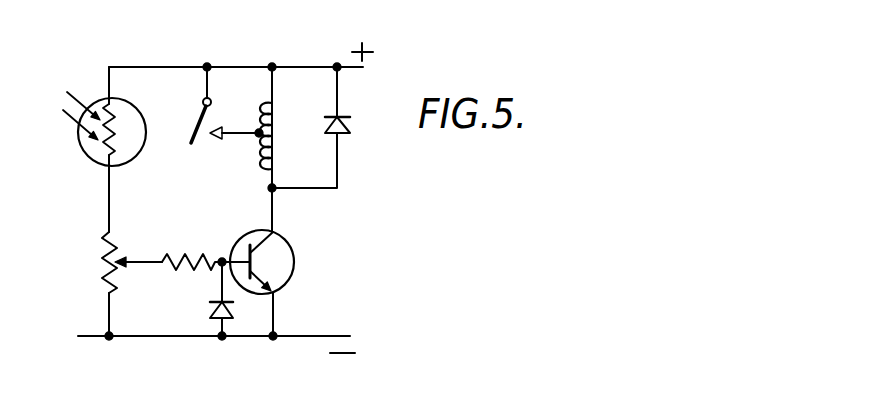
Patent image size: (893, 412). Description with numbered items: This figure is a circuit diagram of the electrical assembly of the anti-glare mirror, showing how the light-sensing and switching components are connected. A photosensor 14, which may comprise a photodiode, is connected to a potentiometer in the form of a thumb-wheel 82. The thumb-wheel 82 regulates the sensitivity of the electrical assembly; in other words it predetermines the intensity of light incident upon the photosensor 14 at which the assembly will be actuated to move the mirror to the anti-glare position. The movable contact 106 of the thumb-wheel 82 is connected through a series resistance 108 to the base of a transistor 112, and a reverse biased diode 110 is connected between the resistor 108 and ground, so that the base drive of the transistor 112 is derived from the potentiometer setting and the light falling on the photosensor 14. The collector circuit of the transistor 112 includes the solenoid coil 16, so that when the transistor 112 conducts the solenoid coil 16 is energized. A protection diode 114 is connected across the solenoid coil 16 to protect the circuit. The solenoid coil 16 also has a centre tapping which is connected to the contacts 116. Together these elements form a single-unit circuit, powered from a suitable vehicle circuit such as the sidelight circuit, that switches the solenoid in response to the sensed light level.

The photosensor 14 is at (95, 152).
The solenoid coil 16 is at (280, 120).
The thumb-wheel 82 is at (105, 265).
The movable contact 106 is at (118, 253).
The series resistance 108 is at (177, 256).
The reverse biased diode 110 is at (210, 313).
The transistor 112 is at (290, 267).
The protection diode 114 is at (350, 127).
The contacts 116 is at (188, 130).